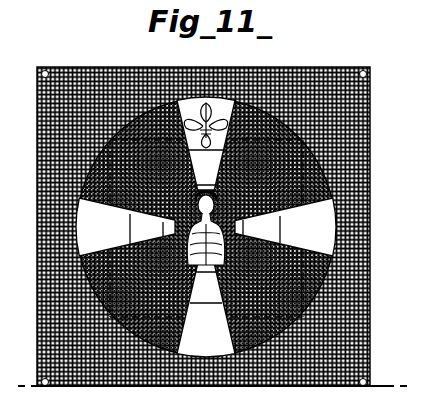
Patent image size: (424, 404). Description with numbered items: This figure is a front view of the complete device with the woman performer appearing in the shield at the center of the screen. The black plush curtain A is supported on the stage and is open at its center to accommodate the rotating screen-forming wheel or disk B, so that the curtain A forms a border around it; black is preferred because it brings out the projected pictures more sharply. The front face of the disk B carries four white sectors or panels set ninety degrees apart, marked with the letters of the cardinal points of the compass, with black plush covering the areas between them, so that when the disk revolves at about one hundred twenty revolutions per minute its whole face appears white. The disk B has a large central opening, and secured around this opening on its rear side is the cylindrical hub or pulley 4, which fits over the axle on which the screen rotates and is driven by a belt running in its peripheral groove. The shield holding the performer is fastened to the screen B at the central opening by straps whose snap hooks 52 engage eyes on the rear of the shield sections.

The curtain A is at (363, 130).
The screen-forming wheel or disk B is at (344, 184).
The cylindrical hub or pulley 4 is at (219, 373).
The snap hooks 52 is at (304, 395).